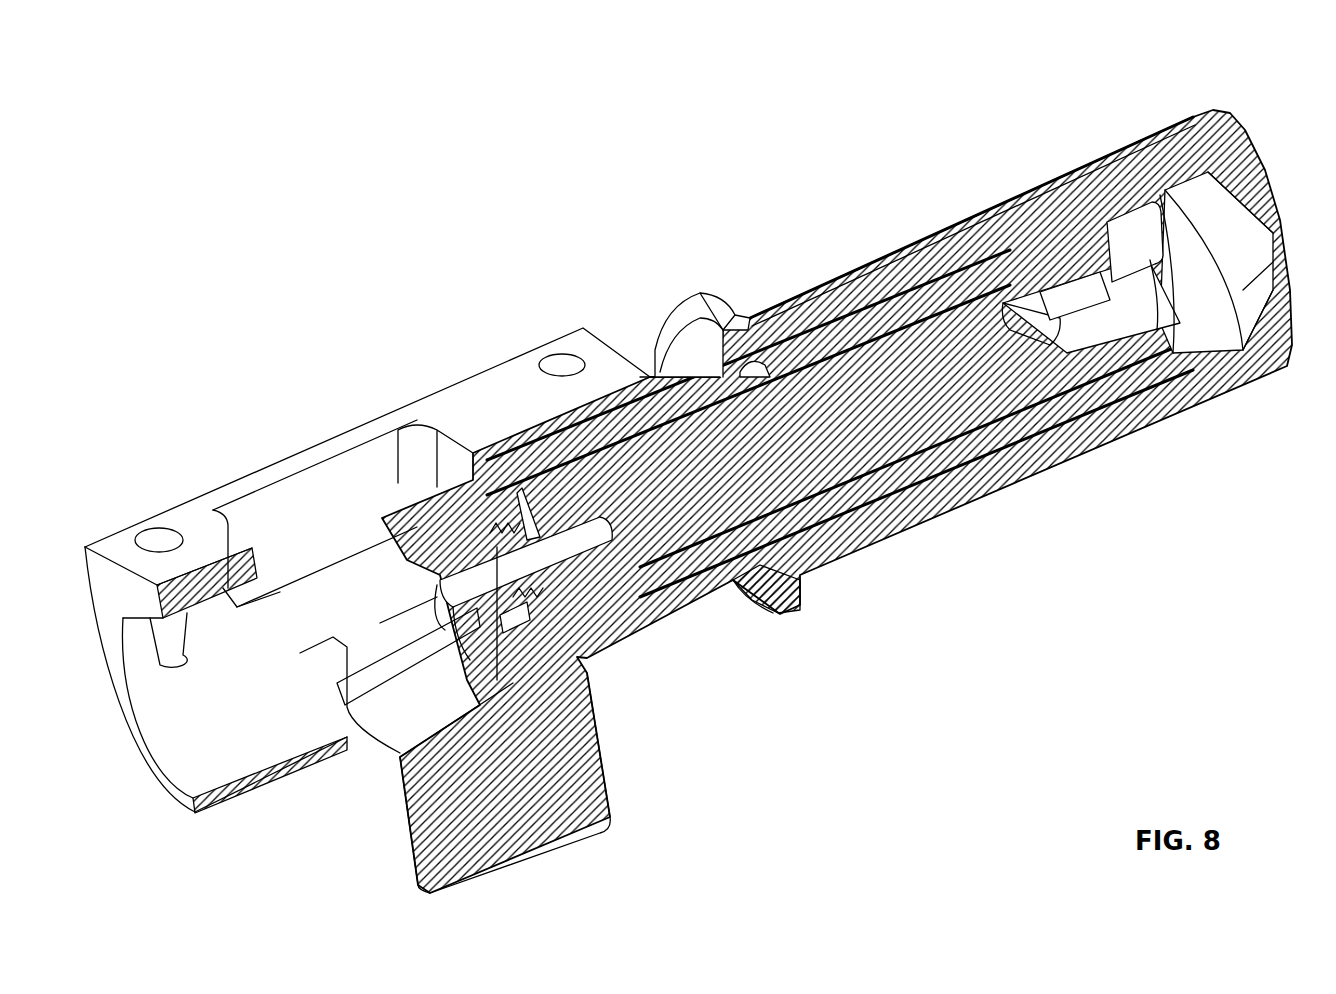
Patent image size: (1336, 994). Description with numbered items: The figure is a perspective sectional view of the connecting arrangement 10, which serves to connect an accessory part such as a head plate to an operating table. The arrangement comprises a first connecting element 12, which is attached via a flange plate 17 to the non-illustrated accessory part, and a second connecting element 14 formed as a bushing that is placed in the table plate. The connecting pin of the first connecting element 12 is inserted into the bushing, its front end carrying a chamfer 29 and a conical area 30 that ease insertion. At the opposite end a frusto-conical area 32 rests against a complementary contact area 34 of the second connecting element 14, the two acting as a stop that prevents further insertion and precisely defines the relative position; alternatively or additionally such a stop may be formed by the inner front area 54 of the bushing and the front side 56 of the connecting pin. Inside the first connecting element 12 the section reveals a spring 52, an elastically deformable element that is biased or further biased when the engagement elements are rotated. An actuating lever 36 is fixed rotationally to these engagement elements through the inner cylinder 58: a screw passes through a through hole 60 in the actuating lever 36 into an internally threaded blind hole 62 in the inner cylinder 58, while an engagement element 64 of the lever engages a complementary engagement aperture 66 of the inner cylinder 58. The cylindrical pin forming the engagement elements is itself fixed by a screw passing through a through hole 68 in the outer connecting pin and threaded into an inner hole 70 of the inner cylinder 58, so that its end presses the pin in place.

The connecting arrangement 10 is at (615, 175).
The first connecting element 12 is at (305, 342).
The second connecting element 14 is at (930, 178).
The flange plate 17 is at (187, 517).
The chamfer 29 is at (1140, 200).
The conical area 30 is at (1133, 200).
The frusto-conical area 32 is at (653, 367).
The contact area 34 is at (760, 357).
The actuating lever 36 is at (517, 797).
The spring 52 is at (530, 597).
The inner front area 54 is at (1243, 290).
The front side 56 is at (1167, 330).
The inner cylinder 58 is at (867, 427).
The through hole 60 is at (457, 590).
The blind hole 62 is at (577, 540).
The engagement element 64 is at (490, 500).
The engagement aperture 66 is at (590, 480).
The through hole 68 is at (1253, 233).
The inner hole 70 is at (1077, 307).